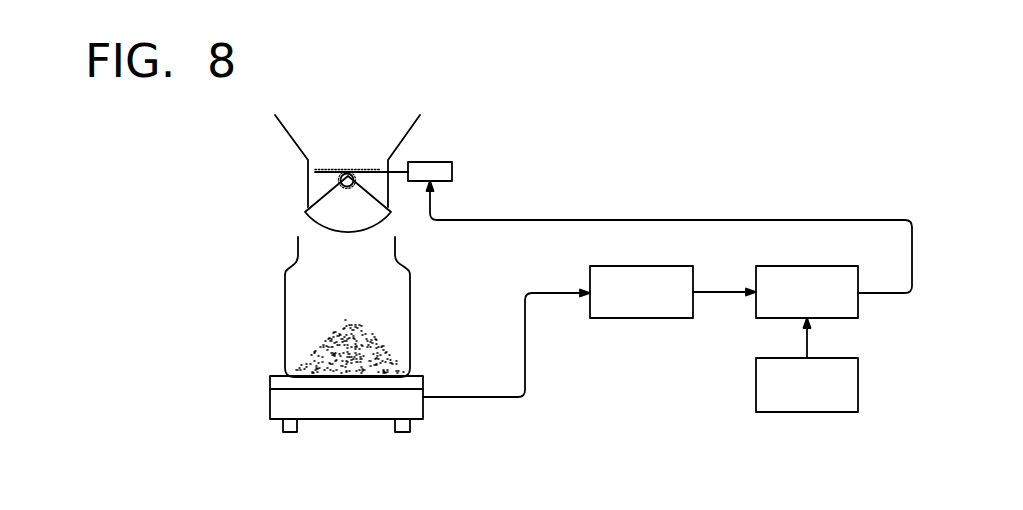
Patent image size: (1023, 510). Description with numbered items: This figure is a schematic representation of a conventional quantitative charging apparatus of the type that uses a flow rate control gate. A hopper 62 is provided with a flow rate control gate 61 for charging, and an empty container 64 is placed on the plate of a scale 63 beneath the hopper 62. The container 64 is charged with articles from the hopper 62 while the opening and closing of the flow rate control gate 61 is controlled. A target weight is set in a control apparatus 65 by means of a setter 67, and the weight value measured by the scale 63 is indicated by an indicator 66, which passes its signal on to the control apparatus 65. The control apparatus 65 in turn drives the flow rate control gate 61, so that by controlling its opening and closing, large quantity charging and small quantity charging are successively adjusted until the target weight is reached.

The flow rate control gate 61 is at (385, 220).
The hopper 62 is at (308, 187).
The scale 63 is at (270, 397).
The container 64 is at (285, 283).
The control apparatus 65 is at (858, 306).
The indicator 66 is at (673, 318).
The setter 67 is at (858, 376).